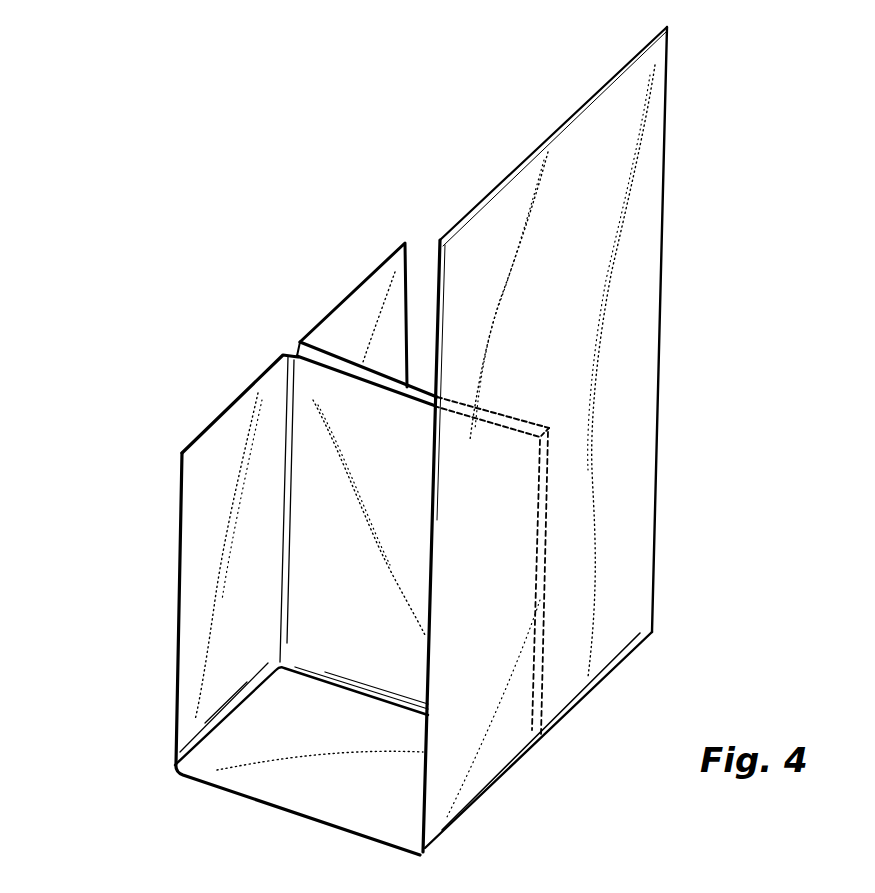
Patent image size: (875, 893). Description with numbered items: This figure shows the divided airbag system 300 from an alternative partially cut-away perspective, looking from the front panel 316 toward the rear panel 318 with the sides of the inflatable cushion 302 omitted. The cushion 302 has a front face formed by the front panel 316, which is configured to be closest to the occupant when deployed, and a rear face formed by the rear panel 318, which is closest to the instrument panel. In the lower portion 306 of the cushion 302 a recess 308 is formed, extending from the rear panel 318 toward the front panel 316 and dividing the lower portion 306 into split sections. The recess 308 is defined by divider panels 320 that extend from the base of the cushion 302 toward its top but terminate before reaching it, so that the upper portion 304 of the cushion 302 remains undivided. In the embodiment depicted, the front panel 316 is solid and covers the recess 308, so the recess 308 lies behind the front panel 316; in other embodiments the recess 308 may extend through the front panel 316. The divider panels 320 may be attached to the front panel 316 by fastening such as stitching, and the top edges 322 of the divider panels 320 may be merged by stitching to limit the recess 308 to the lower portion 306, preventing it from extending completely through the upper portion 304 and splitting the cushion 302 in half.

The divided airbag system 300 is at (702, 117).
The inflatable cushion 302 is at (238, 797).
The upper portion 304 is at (507, 210).
The lower portion 306 is at (410, 668).
The recess 308 is at (293, 347).
The front panel 316 is at (600, 183).
The rear panel 318 is at (348, 327).
The divider panels 320 is at (323, 555).
The top edges 322 is at (410, 388).